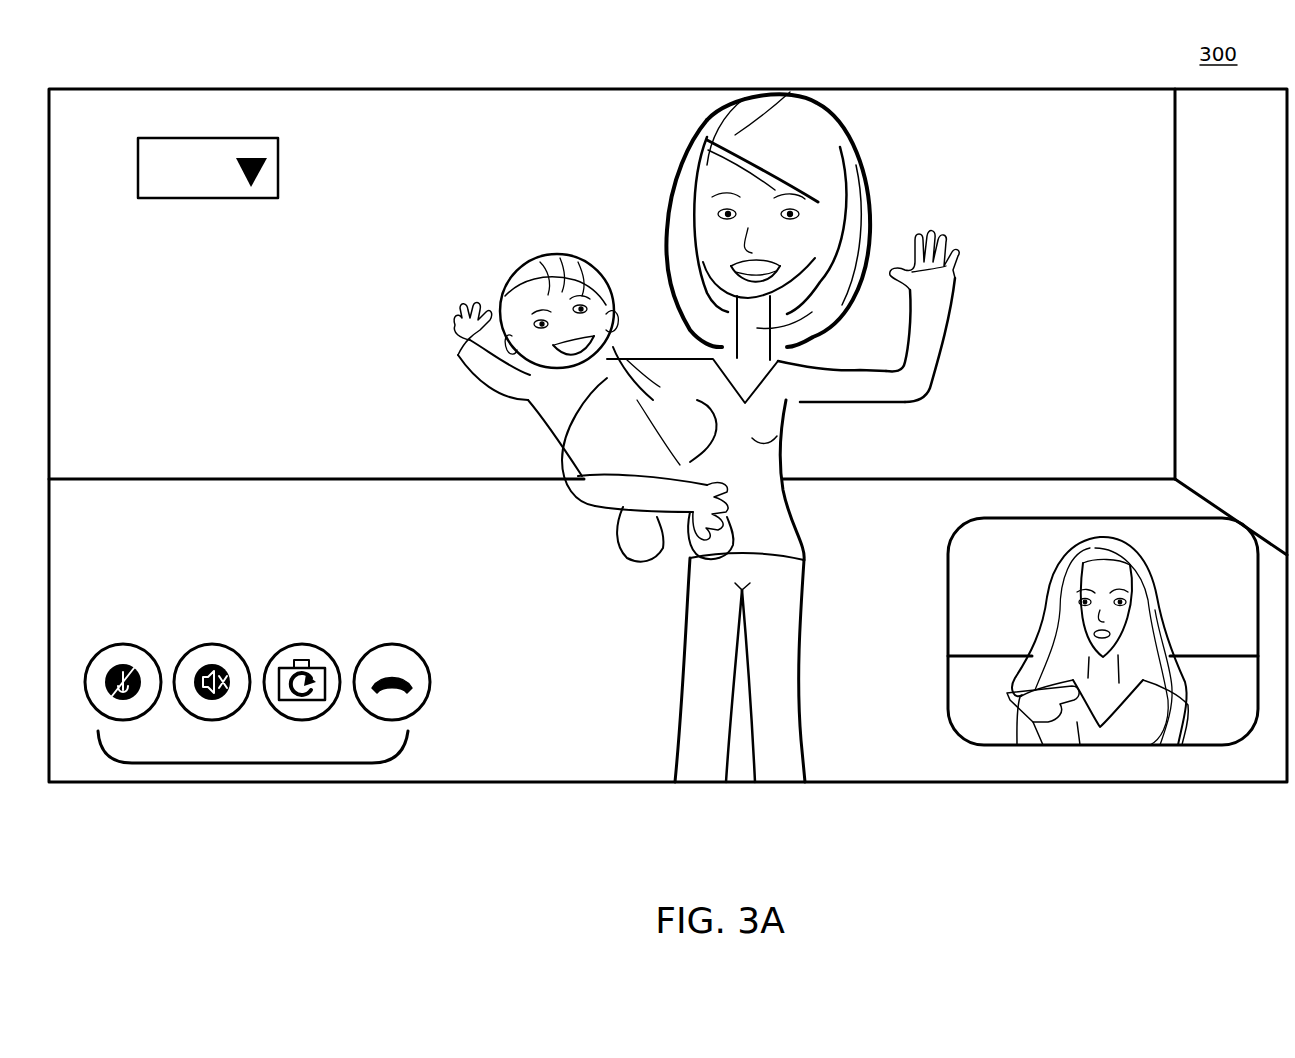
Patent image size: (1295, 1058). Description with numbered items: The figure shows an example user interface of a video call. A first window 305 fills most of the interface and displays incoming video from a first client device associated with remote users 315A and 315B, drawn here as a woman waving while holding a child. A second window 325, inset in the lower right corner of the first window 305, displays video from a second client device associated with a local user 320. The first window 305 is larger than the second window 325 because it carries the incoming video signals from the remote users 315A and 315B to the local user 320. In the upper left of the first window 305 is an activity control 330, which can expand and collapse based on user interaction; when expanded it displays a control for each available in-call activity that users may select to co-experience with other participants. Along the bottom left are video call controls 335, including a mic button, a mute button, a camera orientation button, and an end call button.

The first window 305 is at (287, 89).
The remote user 315A is at (862, 141).
The remote user 315B is at (540, 252).
The local user 320 is at (1163, 613).
The second window 325 is at (1055, 631).
The activity control 330 is at (278, 138).
The video call controls 335 is at (254, 763).